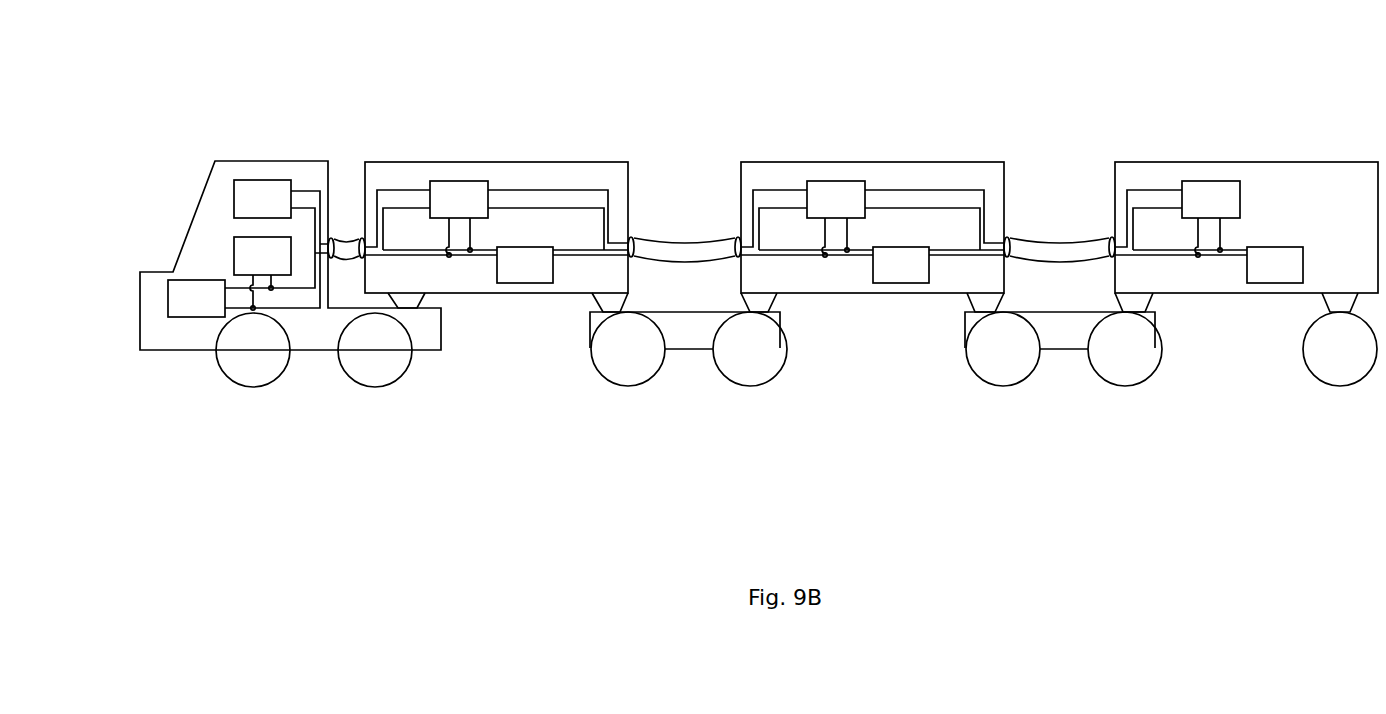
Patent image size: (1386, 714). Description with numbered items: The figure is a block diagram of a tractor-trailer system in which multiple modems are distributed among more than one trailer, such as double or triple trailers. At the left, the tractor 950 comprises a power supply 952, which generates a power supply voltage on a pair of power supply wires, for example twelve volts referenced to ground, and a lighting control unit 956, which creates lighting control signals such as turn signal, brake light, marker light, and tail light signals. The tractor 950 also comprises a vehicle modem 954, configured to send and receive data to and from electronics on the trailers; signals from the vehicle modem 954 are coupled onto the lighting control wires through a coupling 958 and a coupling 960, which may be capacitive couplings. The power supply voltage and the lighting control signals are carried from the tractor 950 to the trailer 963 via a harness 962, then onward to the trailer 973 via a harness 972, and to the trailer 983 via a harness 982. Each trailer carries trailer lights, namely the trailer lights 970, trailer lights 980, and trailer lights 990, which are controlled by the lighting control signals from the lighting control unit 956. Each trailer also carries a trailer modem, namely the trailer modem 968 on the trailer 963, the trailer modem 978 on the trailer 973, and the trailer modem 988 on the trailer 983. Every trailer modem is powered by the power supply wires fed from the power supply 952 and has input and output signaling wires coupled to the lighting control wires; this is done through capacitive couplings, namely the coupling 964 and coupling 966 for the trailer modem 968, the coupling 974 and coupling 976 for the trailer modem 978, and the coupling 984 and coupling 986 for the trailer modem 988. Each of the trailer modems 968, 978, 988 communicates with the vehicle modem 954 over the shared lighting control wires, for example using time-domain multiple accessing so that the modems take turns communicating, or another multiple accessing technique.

The tractor 950 is at (300, 165).
The power supply 952 is at (233, 260).
The vehicle modem 954 is at (233, 205).
The lighting control unit 956 is at (188, 317).
The coupling 958 is at (255, 310).
The coupling 960 is at (273, 290).
The harness 962 is at (345, 238).
The trailer 963 is at (588, 178).
The coupling 964 is at (450, 257).
The coupling 966 is at (471, 252).
The trailer modem 968 is at (433, 181).
The trailer lights 970 is at (548, 283).
The harness 972 is at (698, 240).
The trailer 973 is at (983, 178).
The coupling 974 is at (826, 257).
The coupling 976 is at (848, 252).
The trailer modem 978 is at (807, 181).
The trailer lights 980 is at (924, 283).
The harness 982 is at (1074, 240).
The trailer 983 is at (1327, 188).
The coupling 984 is at (1199, 257).
The coupling 986 is at (1221, 252).
The trailer modem 988 is at (1182, 181).
The trailer lights 990 is at (1298, 283).